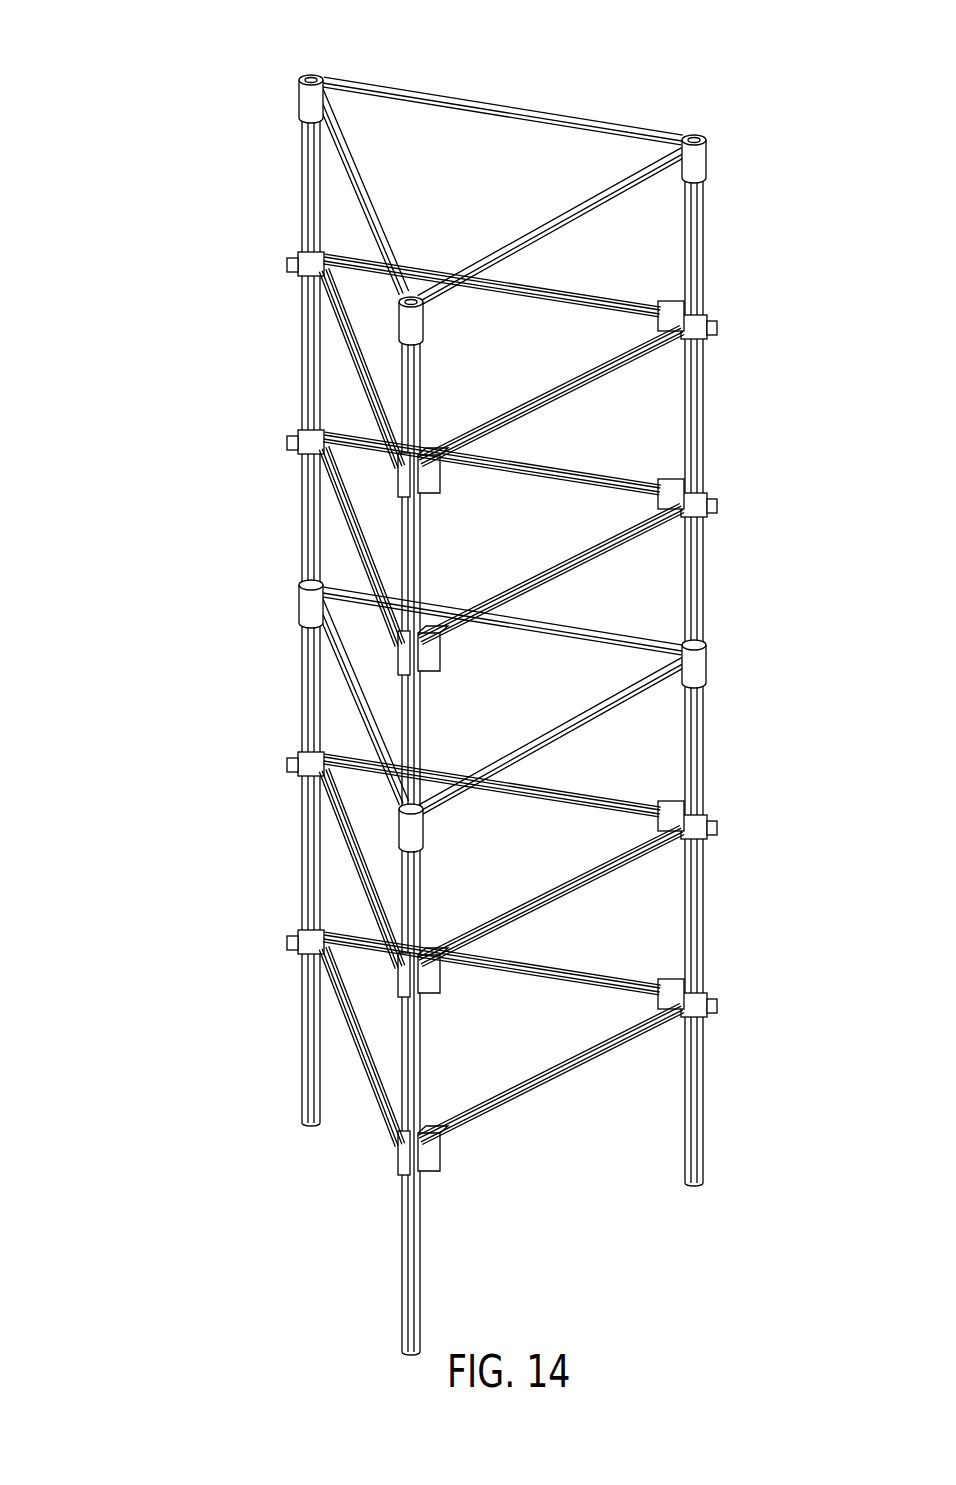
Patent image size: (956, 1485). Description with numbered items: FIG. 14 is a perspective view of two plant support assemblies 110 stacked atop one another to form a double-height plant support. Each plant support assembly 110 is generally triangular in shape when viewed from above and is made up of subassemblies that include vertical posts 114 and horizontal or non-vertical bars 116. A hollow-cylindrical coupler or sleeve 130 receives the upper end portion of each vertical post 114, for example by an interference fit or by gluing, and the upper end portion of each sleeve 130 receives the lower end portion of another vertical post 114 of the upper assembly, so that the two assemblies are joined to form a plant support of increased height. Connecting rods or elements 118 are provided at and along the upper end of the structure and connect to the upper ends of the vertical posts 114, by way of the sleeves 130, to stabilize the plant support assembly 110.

The plant support assembly 110 is at (509, 683).
The vertical post 114 is at (504, 736).
The horizontal bar 116 is at (485, 707).
The connecting element 118 is at (499, 435).
The sleeve 130 is at (505, 463).